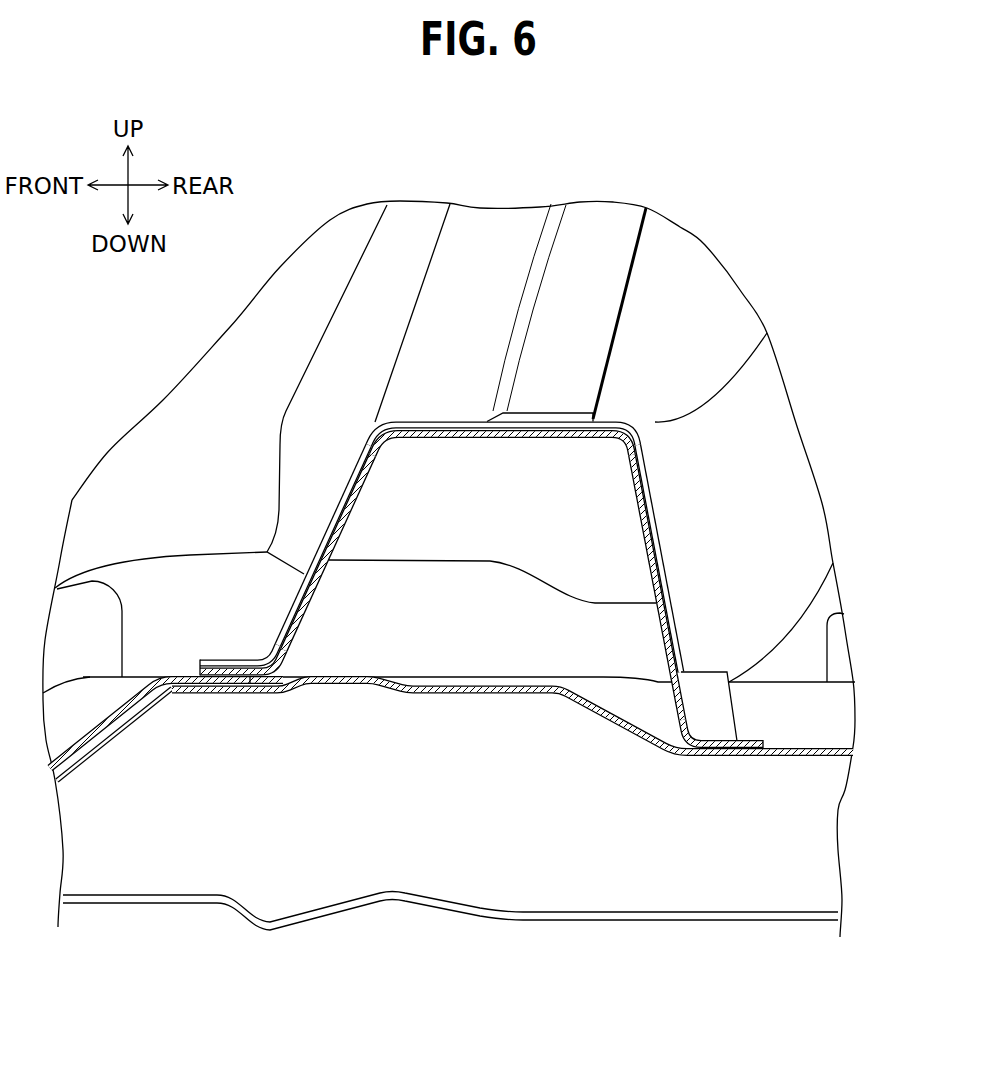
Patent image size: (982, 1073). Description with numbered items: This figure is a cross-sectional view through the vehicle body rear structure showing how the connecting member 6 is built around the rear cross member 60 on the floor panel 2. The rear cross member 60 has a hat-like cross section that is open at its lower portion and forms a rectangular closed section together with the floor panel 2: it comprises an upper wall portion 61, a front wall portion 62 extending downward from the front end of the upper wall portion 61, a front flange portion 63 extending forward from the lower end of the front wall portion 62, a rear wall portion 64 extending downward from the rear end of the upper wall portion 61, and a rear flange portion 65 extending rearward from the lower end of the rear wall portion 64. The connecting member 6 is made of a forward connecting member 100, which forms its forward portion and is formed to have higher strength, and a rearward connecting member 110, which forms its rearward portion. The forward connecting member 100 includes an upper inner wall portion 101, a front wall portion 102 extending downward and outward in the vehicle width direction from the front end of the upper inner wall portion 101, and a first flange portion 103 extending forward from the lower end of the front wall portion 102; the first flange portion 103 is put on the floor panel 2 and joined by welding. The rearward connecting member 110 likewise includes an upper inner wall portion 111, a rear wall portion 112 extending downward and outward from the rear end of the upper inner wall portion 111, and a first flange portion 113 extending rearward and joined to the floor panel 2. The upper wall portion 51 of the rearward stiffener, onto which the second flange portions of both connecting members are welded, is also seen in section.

The floor panel 2 is at (118, 700).
The connecting member 6 is at (512, 181).
The upper wall portion 51 is at (802, 747).
The rear cross member 60 is at (490, 624).
The upper wall portion 61 is at (493, 443).
The front wall portion 62 is at (350, 523).
The front flange portion 63 is at (252, 682).
The rear wall portion 64 is at (650, 557).
The rear flange portion 65 is at (752, 746).
The forward connecting member 100 is at (435, 549).
The upper inner wall portion 101 is at (450, 423).
The front wall portion 102 is at (289, 608).
The first flange portion 103 is at (241, 658).
The rearward connecting member 110 is at (481, 448).
The upper inner wall portion 111 is at (553, 413).
The rear wall portion 112 is at (657, 518).
The first flange portion 113 is at (802, 657).